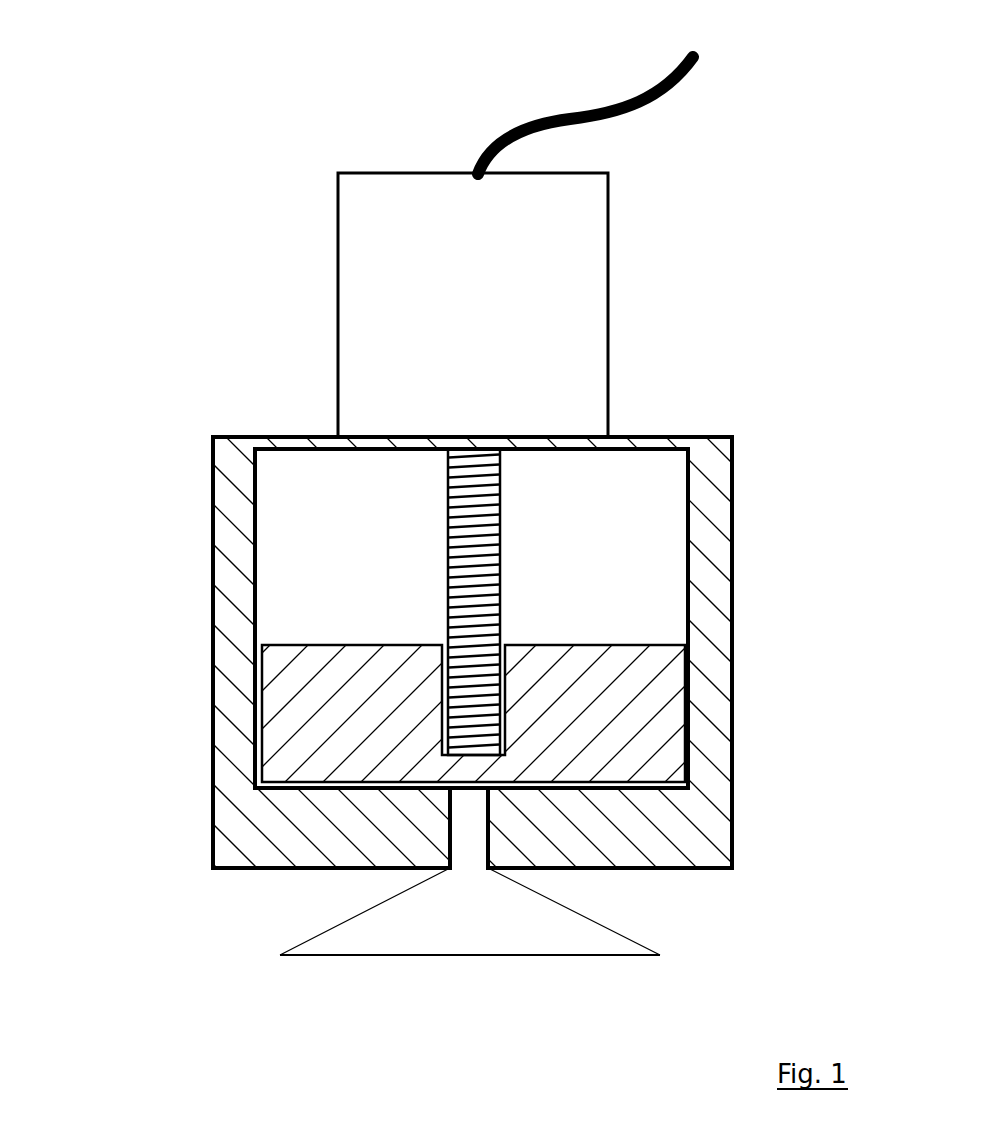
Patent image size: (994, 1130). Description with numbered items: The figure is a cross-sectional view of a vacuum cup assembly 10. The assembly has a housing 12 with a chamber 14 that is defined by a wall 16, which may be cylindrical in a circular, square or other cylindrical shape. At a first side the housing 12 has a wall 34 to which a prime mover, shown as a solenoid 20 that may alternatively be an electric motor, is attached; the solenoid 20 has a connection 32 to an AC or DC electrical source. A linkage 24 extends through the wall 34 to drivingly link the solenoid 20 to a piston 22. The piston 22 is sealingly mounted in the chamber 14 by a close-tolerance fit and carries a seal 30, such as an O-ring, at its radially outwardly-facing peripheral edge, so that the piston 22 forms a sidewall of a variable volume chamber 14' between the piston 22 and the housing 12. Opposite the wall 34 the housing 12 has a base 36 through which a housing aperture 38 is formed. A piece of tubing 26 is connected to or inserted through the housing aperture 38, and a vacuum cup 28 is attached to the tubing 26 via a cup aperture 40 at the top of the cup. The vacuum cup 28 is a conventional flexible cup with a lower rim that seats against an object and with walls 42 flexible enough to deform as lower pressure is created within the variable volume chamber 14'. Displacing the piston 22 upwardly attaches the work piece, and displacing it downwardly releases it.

The vacuum cup assembly 10 is at (737, 340).
The housing 12 is at (765, 645).
The chamber 14 is at (403, 576).
The variable volume chamber 14' is at (455, 916).
The wall 16 is at (235, 585).
The solenoid 20 is at (338, 233).
The piston 22 is at (280, 702).
The linkage 24 is at (500, 555).
The tubing 26 is at (445, 833).
The vacuum cup 28 is at (280, 955).
The seal 30 is at (690, 763).
The connection 32 is at (567, 117).
The wall 34 is at (400, 437).
The base 36 is at (640, 838).
The housing aperture 38 is at (480, 870).
The cup aperture 40 is at (470, 867).
The walls 42 is at (323, 930).